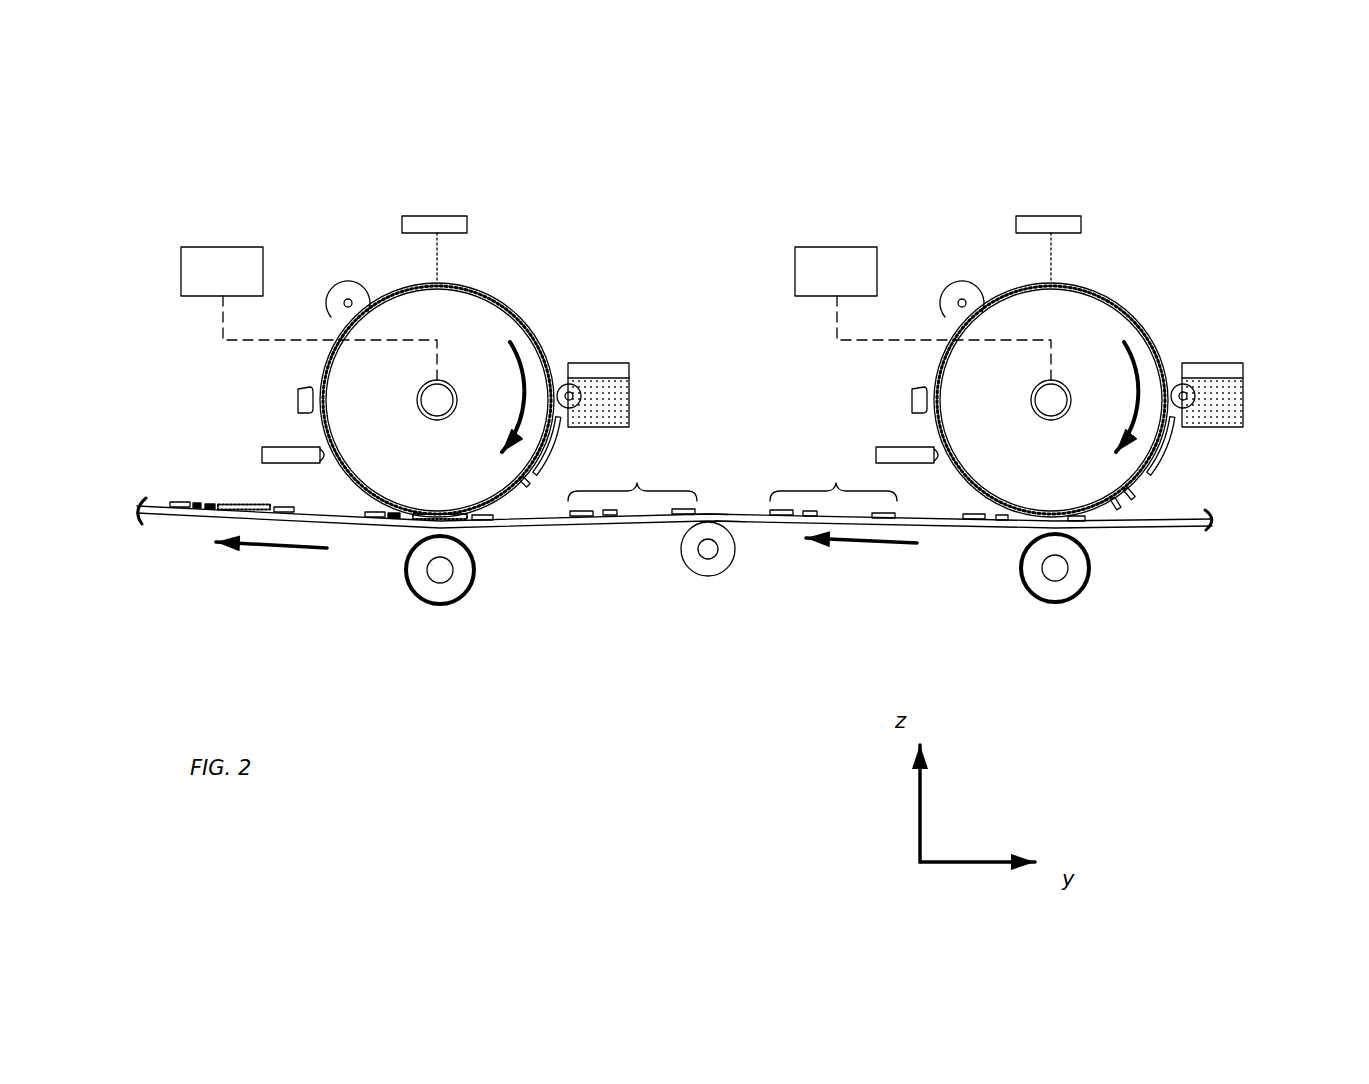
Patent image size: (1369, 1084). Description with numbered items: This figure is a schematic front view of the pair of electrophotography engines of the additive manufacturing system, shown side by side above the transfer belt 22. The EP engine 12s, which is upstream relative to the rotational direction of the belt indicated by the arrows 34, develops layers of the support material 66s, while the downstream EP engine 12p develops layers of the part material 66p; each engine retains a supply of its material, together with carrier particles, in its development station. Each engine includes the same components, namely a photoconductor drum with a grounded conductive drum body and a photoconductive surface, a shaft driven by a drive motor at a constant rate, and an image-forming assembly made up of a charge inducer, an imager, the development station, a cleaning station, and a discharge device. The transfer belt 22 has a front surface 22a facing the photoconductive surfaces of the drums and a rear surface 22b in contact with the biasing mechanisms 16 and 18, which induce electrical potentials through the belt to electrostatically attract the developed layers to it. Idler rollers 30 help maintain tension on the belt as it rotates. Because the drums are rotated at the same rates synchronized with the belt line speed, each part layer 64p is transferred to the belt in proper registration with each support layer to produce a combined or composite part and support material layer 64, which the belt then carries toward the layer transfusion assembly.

The EP engine 12p is at (450, 364).
The EP engine 12s is at (1064, 336).
The biasing mechanism 16 is at (1072, 577).
The biasing mechanism 18 is at (458, 577).
The transfer belt 22 is at (1180, 545).
The front surface 22a is at (740, 508).
The rear surface 22b is at (738, 525).
The idler roller 30 is at (712, 570).
The arrow 34 is at (270, 548).
The combined part and support material layer 64 is at (220, 500).
The layer of the part material 64p is at (556, 455).
The part material 66p is at (613, 390).
The support material 66s is at (1246, 407).